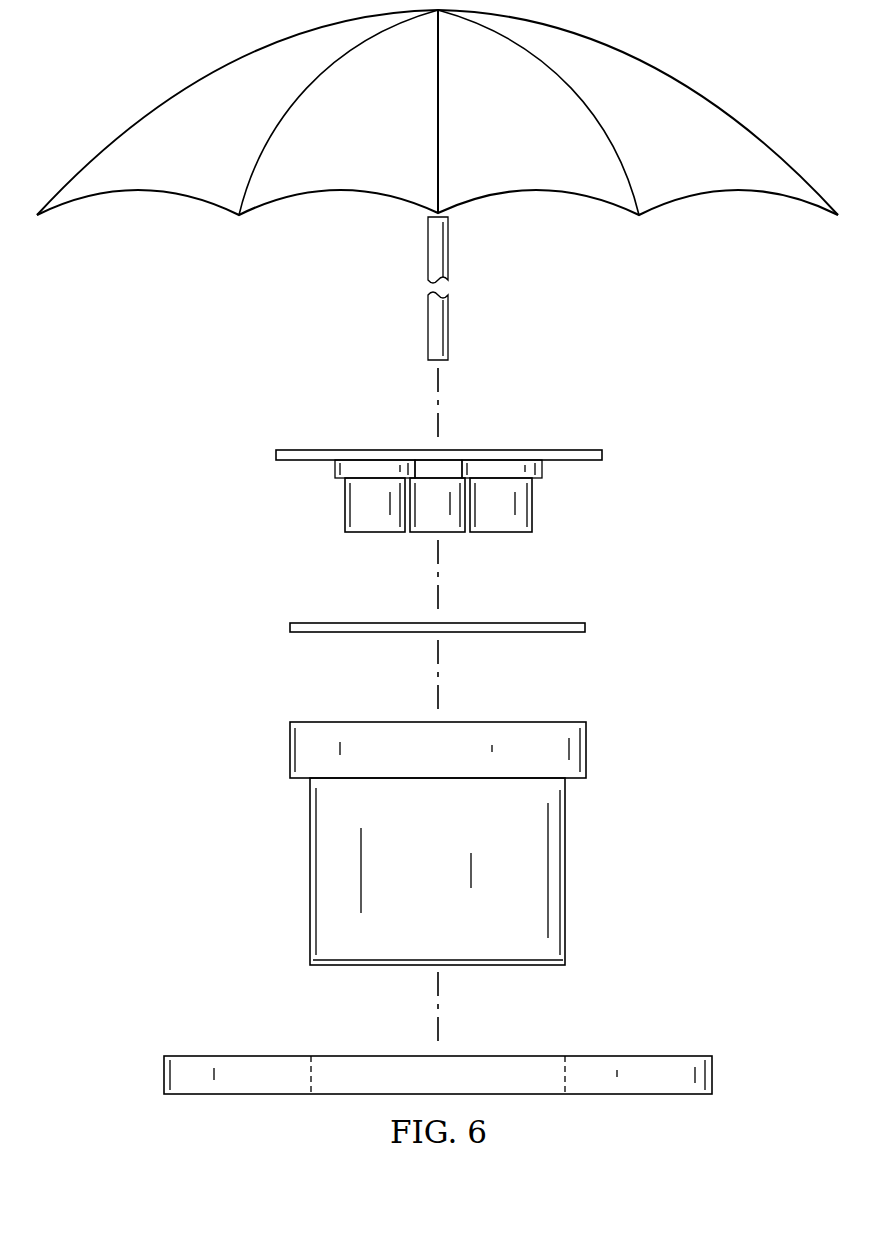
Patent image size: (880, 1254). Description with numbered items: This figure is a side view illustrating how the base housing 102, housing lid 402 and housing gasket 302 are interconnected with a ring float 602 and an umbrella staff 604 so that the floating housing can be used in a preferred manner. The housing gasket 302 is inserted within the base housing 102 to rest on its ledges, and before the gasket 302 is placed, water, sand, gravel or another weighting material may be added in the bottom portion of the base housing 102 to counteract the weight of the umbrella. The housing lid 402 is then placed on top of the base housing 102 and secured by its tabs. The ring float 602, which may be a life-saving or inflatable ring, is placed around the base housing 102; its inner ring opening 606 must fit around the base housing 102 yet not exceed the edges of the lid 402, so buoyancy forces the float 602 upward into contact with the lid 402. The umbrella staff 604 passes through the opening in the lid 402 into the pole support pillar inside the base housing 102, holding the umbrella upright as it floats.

The base housing 102 is at (565, 868).
The housing gasket 302 is at (585, 626).
The housing lid 402 is at (276, 455).
The ring float 602 is at (712, 1075).
The umbrella staff 604 is at (428, 327).
The inner ring opening 606 is at (564, 1069).